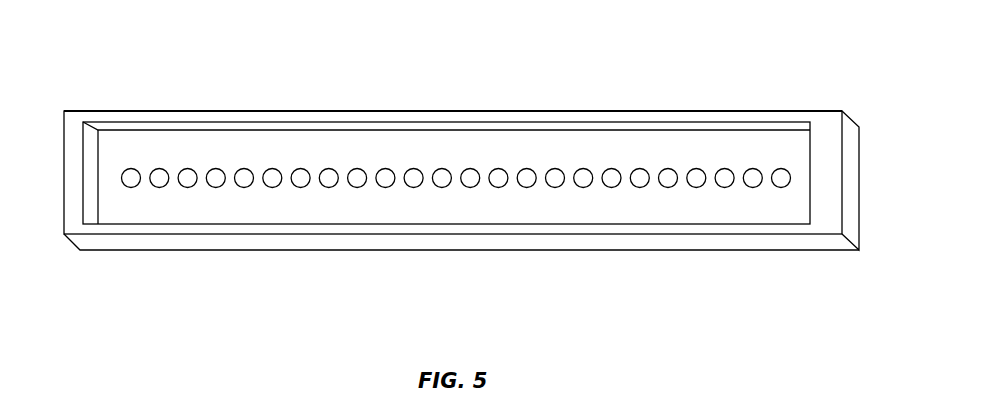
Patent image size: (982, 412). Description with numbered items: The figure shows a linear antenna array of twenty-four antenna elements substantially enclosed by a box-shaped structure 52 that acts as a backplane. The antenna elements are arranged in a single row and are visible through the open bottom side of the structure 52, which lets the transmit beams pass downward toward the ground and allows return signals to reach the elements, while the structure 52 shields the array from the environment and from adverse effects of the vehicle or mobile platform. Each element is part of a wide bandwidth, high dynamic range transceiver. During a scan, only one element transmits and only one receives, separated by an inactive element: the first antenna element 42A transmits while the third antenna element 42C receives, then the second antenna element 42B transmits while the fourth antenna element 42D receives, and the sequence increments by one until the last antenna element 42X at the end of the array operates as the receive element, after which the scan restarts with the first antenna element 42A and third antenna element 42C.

The box-shaped structure 52 is at (848, 130).
The first antenna element 42A is at (131, 188).
The second antenna element 42B is at (159, 188).
The third antenna element 42C is at (188, 168).
The fourth antenna element 42D is at (216, 168).
The last antenna element 42X is at (781, 188).